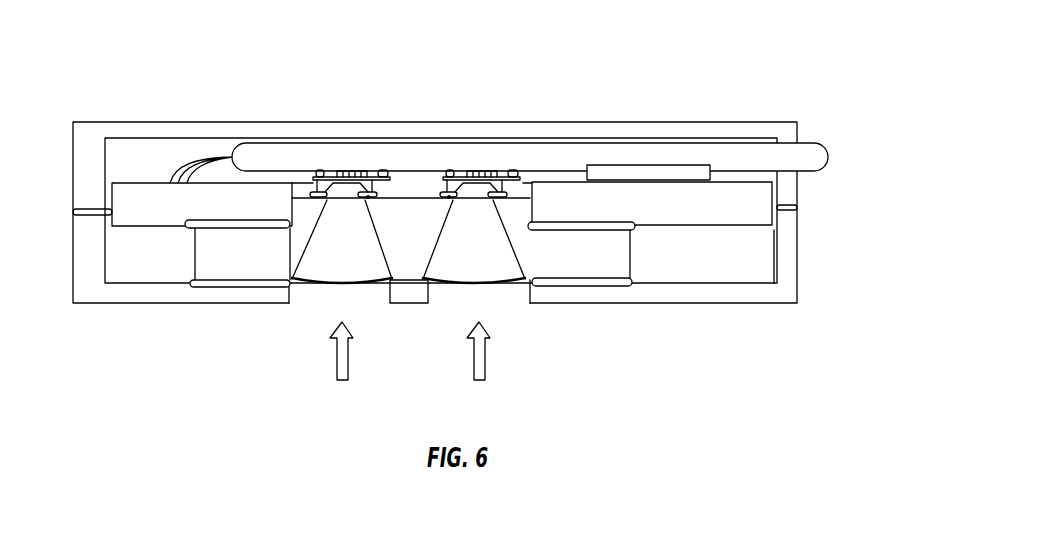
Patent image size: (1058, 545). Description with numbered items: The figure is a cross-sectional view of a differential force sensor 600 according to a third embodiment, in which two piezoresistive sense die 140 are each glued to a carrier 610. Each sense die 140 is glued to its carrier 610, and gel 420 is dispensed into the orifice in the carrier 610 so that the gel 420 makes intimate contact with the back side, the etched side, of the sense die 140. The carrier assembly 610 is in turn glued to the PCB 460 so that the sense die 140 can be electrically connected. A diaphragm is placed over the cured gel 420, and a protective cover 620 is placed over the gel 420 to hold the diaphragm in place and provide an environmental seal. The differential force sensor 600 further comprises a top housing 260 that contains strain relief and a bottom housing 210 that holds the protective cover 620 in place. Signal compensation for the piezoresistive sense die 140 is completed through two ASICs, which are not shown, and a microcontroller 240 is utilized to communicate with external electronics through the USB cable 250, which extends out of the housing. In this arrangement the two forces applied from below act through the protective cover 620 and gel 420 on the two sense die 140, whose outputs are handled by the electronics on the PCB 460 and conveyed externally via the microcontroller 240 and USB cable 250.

The differential force sensor 600 is at (679, 36).
The bottom housing 210 is at (757, 293).
The top housing 260 is at (757, 128).
The microcontroller 240 is at (636, 166).
The USB cable 250 is at (780, 166).
The PCB 460 is at (170, 211).
The carrier 610 is at (258, 268).
The piezoresistive sense die 140 is at (449, 199).
The gel 420 is at (360, 266).
The protective cover 620 is at (487, 285).